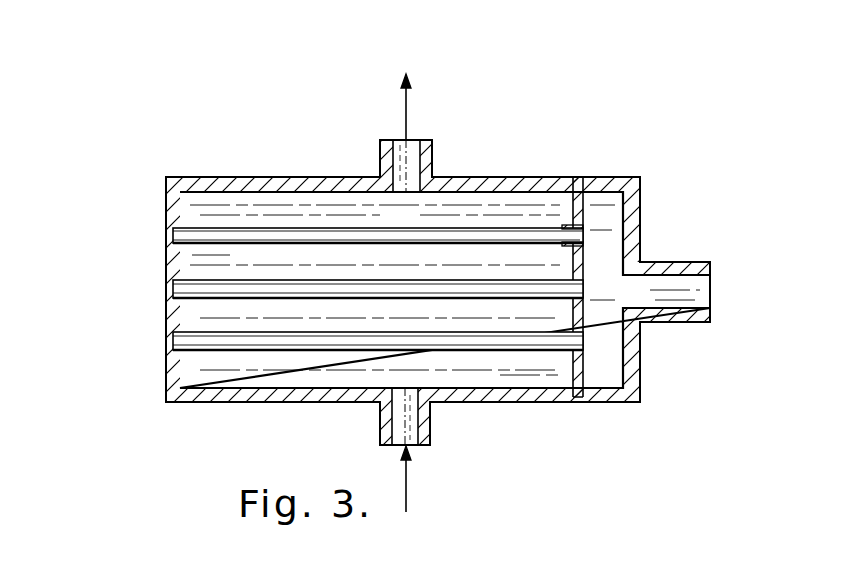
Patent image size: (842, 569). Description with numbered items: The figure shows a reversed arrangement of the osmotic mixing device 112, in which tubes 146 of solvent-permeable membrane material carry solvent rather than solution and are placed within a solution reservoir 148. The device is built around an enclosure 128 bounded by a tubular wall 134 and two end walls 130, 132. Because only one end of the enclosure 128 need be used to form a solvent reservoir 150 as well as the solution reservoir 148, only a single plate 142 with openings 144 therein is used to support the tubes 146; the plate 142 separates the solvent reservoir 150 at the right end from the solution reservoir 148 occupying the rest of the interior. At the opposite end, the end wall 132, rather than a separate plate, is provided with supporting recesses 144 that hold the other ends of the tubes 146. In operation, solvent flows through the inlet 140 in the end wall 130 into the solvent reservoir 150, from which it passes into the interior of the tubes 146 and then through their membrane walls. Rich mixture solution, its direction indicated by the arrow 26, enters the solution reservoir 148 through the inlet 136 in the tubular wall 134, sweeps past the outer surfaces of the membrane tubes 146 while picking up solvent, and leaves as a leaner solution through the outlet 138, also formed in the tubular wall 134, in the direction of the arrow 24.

The lean mixture solution flow arrow 24 is at (406, 123).
The rich mixture solution flow arrow 26 is at (406, 493).
The heat exchanger / filter housing assembly 112 is at (290, 154).
The enclosure 128 is at (286, 402).
The end wall 130 is at (640, 222).
The end wall 132 is at (166, 200).
The tubular wall 134 is at (208, 177).
The inlet 136 is at (383, 412).
The outlet 138 is at (382, 150).
The inlet 140 is at (681, 262).
The plate 142 is at (583, 188).
The openings / supporting recesses 144 is at (178, 238).
The tubes 146 is at (178, 297).
The solution reservoir 148 is at (202, 375).
The solvent reservoir 150 is at (617, 385).